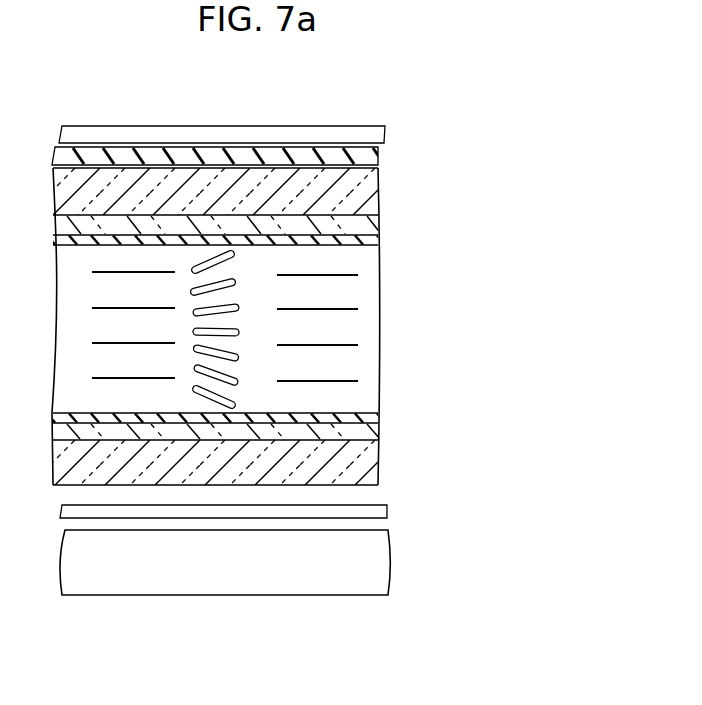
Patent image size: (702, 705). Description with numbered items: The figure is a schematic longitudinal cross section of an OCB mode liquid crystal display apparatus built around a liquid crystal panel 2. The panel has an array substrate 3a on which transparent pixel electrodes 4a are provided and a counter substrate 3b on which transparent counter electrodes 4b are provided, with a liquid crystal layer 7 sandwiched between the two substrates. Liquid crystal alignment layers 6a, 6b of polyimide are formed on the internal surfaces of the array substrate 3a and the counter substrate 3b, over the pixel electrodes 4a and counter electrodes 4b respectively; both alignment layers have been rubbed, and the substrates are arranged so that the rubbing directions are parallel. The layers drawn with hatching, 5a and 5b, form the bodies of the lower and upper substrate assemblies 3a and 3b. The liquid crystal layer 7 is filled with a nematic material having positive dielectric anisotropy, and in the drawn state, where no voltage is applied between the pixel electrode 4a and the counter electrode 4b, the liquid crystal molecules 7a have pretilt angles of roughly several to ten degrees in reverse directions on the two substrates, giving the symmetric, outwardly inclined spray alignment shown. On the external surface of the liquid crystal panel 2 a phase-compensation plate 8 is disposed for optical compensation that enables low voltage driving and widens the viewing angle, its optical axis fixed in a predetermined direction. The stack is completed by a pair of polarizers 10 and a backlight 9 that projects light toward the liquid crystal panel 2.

The liquid crystal panel 2 is at (323, 330).
The array substrate 3a is at (301, 448).
The counter substrate 3b is at (298, 216).
The pixel electrode 4a is at (383, 432).
The counter electrode 4b is at (382, 225).
The lower glass substrate 5a is at (383, 468).
The upper glass substrate 5b is at (380, 188).
The liquid crystal alignment layer 6a is at (383, 415).
The liquid crystal alignment layer 6b is at (383, 240).
The liquid crystal layer 7 is at (289, 329).
The liquid crystal molecules 7a is at (240, 307).
The phase-compensation plate 8 is at (378, 160).
The backlight 9 is at (390, 550).
The polarizer 10 is at (385, 134).